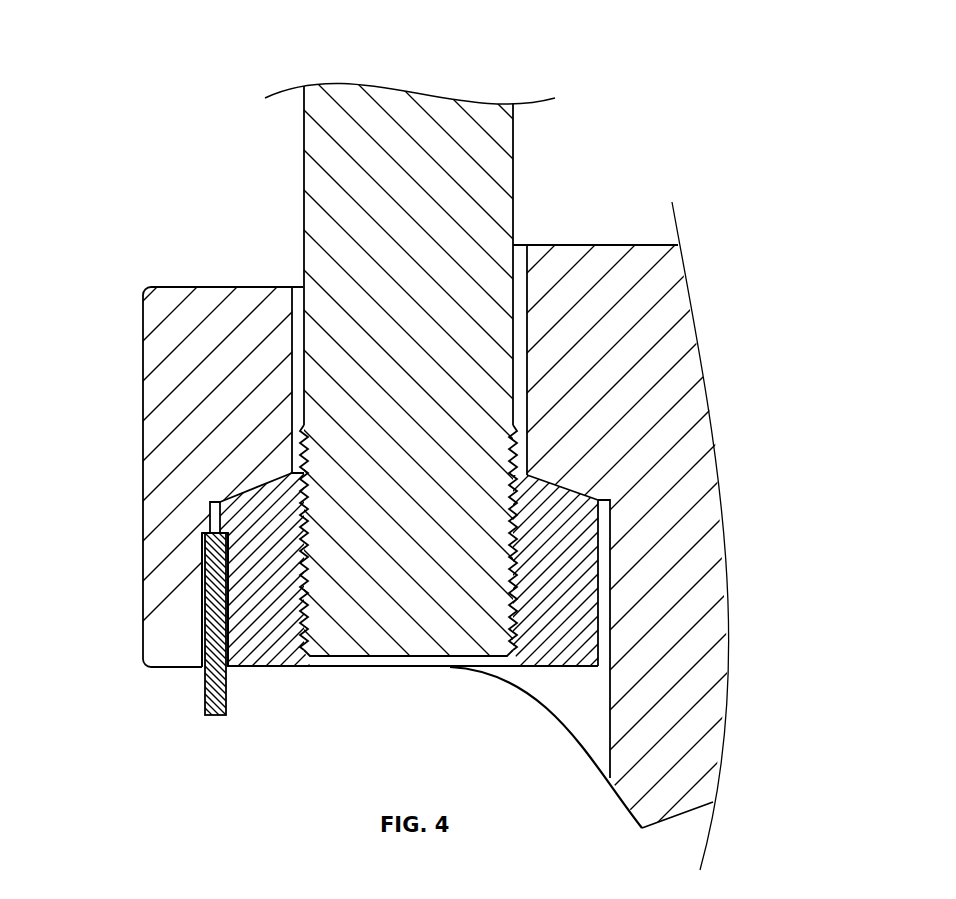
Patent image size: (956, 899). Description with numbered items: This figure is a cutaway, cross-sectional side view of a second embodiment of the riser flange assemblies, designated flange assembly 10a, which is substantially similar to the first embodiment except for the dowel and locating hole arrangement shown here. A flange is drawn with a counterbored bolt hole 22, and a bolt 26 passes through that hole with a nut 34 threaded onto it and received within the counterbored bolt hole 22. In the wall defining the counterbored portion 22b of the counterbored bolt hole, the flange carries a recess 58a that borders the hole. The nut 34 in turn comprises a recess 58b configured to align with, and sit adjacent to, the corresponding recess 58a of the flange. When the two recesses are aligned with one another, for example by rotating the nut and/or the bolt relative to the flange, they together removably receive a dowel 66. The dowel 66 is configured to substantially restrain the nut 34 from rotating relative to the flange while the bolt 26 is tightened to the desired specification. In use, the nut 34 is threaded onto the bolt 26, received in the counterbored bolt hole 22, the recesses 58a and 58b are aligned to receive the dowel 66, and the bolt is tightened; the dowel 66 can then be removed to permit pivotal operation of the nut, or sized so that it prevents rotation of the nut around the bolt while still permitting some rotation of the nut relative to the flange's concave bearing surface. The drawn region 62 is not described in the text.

The flange assembly 10a is at (212, 90).
The counterbored bolt hole 22 is at (287, 325).
The counterbored portion 22b is at (207, 505).
The bolt 26 is at (513, 400).
The nut 34 is at (585, 592).
The recess 58a is at (191, 622).
The recess 58b is at (240, 646).
The slot 62 is at (198, 587).
The dowel 66 is at (205, 683).